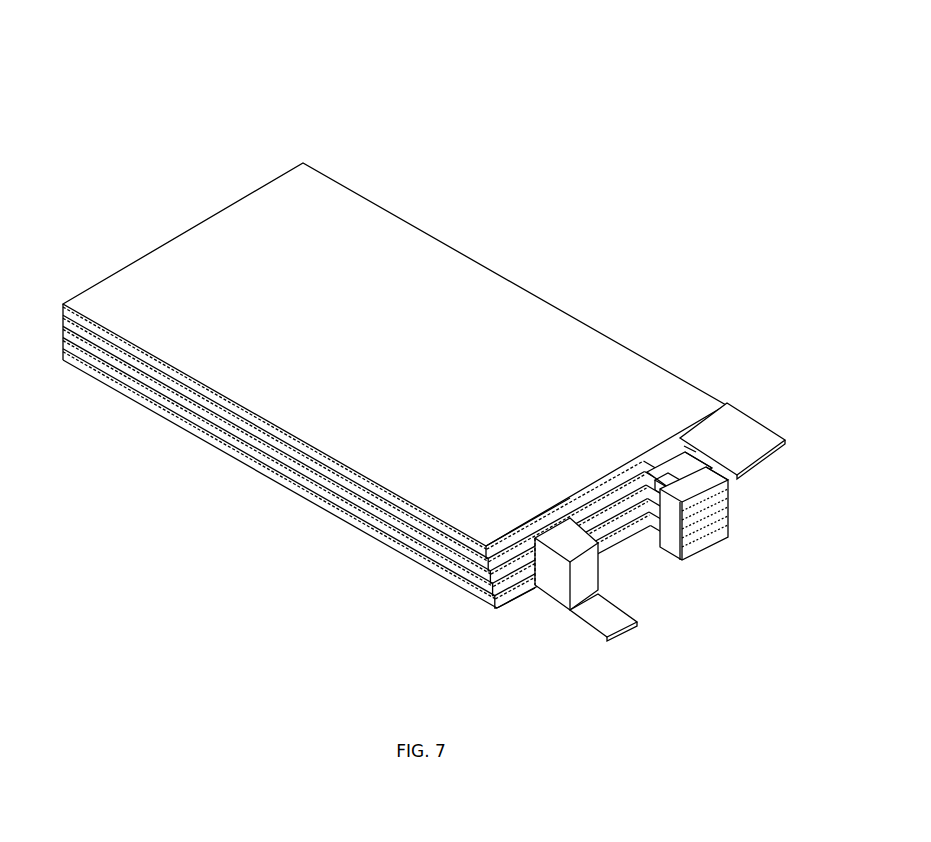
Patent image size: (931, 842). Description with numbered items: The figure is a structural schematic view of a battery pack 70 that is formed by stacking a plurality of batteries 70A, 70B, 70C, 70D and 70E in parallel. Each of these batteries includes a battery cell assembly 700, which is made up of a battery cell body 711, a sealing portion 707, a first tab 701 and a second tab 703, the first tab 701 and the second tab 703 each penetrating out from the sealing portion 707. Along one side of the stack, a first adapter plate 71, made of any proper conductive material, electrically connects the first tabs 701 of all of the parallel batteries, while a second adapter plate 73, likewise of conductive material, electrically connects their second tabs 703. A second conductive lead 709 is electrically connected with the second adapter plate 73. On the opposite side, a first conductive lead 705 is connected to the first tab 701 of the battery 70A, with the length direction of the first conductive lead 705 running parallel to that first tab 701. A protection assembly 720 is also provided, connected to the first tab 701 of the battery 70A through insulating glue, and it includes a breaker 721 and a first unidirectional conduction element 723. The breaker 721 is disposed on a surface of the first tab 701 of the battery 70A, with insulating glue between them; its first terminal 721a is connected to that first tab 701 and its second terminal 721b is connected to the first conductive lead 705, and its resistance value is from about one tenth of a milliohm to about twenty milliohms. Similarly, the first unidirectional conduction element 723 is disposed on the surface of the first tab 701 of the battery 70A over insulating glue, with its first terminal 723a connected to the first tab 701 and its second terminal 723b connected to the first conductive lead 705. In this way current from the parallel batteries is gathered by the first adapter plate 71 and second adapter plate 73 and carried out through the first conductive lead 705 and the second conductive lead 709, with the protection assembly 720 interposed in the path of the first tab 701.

The battery pack 70 is at (416, 37).
The battery cell assembly 700 is at (397, 232).
The battery cell body 711 is at (502, 302).
The battery 70A is at (470, 556).
The battery 70B is at (270, 445).
The battery 70C is at (312, 480).
The battery 70D is at (350, 515).
The battery 70E is at (418, 570).
The first tab 701 is at (668, 518).
The sealing portion 707 is at (515, 535).
The second tab 703 is at (552, 588).
The second adapter plate 73 is at (583, 587).
The second conductive lead 709 is at (603, 612).
The first adapter plate 71 is at (708, 548).
The first unidirectional conduction element 723 is at (714, 492).
The first terminal 723a is at (660, 530).
The second terminal 723b is at (735, 478).
The breaker 721 is at (673, 455).
The first terminal 721a is at (659, 486).
The second terminal 721b is at (702, 447).
The protection assembly 720 is at (689, 446).
The first conductive lead 705 is at (765, 447).